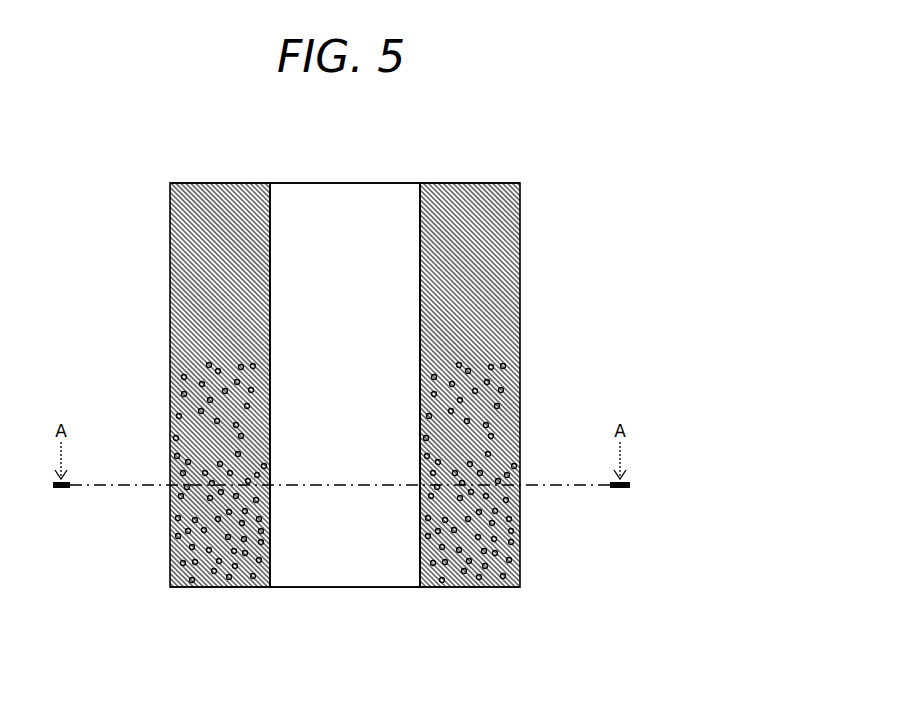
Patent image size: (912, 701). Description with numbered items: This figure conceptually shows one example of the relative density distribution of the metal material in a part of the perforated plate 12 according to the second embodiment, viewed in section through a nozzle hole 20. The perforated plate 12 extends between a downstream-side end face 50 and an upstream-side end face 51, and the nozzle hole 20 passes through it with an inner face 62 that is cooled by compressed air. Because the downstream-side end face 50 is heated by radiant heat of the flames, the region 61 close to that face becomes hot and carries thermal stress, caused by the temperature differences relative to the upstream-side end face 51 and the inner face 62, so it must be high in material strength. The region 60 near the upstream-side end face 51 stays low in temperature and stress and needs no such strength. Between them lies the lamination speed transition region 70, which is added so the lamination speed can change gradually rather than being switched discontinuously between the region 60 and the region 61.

The perforated plate 12 is at (183, 218).
The nozzle hole 20 is at (302, 202).
The downstream-side end face 50 is at (458, 182).
The upstream-side end face 51 is at (452, 590).
The region 60 is at (525, 448).
The region 61 is at (525, 187).
The inner face 62 is at (417, 208).
The lamination speed transition region 70 is at (525, 353).